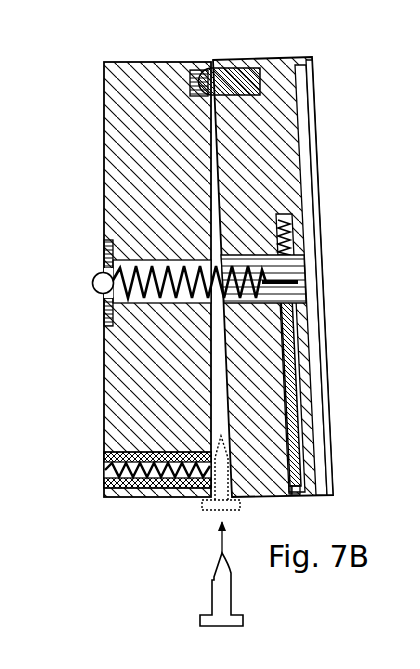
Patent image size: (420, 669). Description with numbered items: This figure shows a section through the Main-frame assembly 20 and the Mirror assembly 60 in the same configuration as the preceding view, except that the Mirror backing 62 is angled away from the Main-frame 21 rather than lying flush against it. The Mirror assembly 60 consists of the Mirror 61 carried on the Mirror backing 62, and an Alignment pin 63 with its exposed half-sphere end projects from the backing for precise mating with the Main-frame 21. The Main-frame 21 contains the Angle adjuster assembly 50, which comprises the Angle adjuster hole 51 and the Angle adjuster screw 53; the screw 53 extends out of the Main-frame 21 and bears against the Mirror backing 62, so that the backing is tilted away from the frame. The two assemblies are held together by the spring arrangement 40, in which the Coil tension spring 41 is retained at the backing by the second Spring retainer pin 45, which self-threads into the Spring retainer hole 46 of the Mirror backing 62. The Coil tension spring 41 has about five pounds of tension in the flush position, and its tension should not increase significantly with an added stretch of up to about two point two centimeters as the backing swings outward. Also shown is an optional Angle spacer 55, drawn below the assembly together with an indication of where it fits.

The Main-frame assembly 20 is at (80, 103).
The Main-frame 21 is at (104, 167).
The locking ball assembly 40 is at (72, 285).
The Coil tension spring 41 is at (96, 273).
The Spring retainer pin #2 45 is at (298, 490).
The Spring retainer hole 46 is at (292, 318).
The Angle adjuster assembly 50 is at (97, 453).
The Angle adjuster hole 51 is at (200, 498).
The Angle adjuster screw 53 is at (105, 472).
The Angle spacer 55 is at (212, 600).
The Mirror assembly 60 is at (330, 68).
The Mirror 61 is at (317, 173).
The Mirror backing 62 is at (275, 59).
The Alignment pin 63 is at (221, 72).